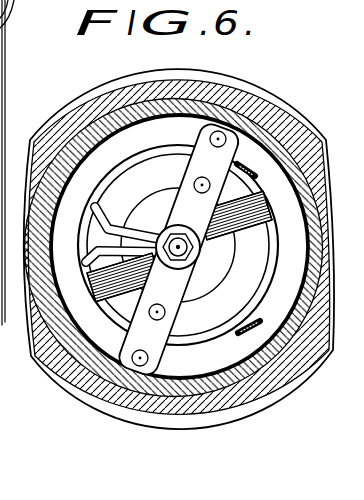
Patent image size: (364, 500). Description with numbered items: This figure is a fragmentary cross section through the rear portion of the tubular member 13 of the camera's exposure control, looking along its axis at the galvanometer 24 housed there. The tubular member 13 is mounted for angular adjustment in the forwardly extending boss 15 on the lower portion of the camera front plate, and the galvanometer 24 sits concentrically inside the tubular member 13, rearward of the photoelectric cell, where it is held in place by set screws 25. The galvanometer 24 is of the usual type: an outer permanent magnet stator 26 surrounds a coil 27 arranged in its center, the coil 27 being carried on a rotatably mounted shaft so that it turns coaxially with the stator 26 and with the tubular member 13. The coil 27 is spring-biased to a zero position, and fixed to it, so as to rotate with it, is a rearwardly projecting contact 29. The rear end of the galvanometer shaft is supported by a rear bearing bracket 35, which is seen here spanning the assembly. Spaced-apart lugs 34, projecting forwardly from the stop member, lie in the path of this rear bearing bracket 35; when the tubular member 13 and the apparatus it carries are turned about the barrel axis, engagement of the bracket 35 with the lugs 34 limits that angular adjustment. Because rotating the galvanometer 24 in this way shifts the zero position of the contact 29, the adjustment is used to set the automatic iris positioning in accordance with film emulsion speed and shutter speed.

The tubular member 13 is at (107, 128).
The forwardly extending boss 15 is at (247, 107).
The galvanometer 24 is at (107, 333).
The set screws 25 is at (181, 99).
The permanent magnet stator 26 is at (142, 144).
The coil 27 is at (280, 200).
The contact 29 is at (240, 244).
The lugs 34 is at (262, 171).
The rear bearing bracket 35 is at (197, 171).